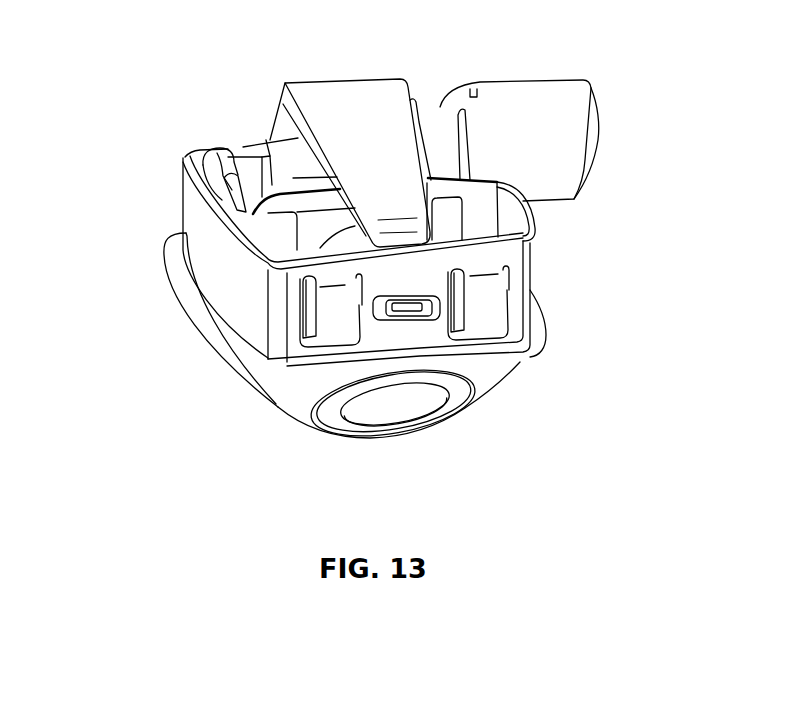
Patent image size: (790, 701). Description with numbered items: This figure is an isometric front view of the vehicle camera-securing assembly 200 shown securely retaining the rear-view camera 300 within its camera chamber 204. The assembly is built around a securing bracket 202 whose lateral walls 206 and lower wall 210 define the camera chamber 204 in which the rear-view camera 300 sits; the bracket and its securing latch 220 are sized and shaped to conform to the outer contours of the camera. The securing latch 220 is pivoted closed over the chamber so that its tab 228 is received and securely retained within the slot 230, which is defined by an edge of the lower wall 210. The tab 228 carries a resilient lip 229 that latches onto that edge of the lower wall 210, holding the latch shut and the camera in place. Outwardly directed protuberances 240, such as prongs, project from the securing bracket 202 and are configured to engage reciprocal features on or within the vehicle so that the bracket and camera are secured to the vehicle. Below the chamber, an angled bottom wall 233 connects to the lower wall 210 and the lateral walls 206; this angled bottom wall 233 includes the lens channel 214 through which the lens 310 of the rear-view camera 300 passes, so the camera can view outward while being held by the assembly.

The vehicle camera-securing assembly 200 is at (137, 138).
The securing bracket 202 is at (170, 260).
The camera chamber 204 is at (217, 155).
The lateral walls 206 is at (196, 311).
The lower wall 210 is at (440, 247).
The lens channel 214 is at (455, 402).
The securing latch 220 is at (344, 80).
The tab 228 is at (437, 318).
The resilient lip 229 is at (418, 270).
The slot 230 is at (398, 316).
The angled bottom wall 233 is at (284, 409).
The protuberances 240 is at (337, 325).
The rear-view camera 300 is at (540, 80).
The lens 310 is at (410, 409).